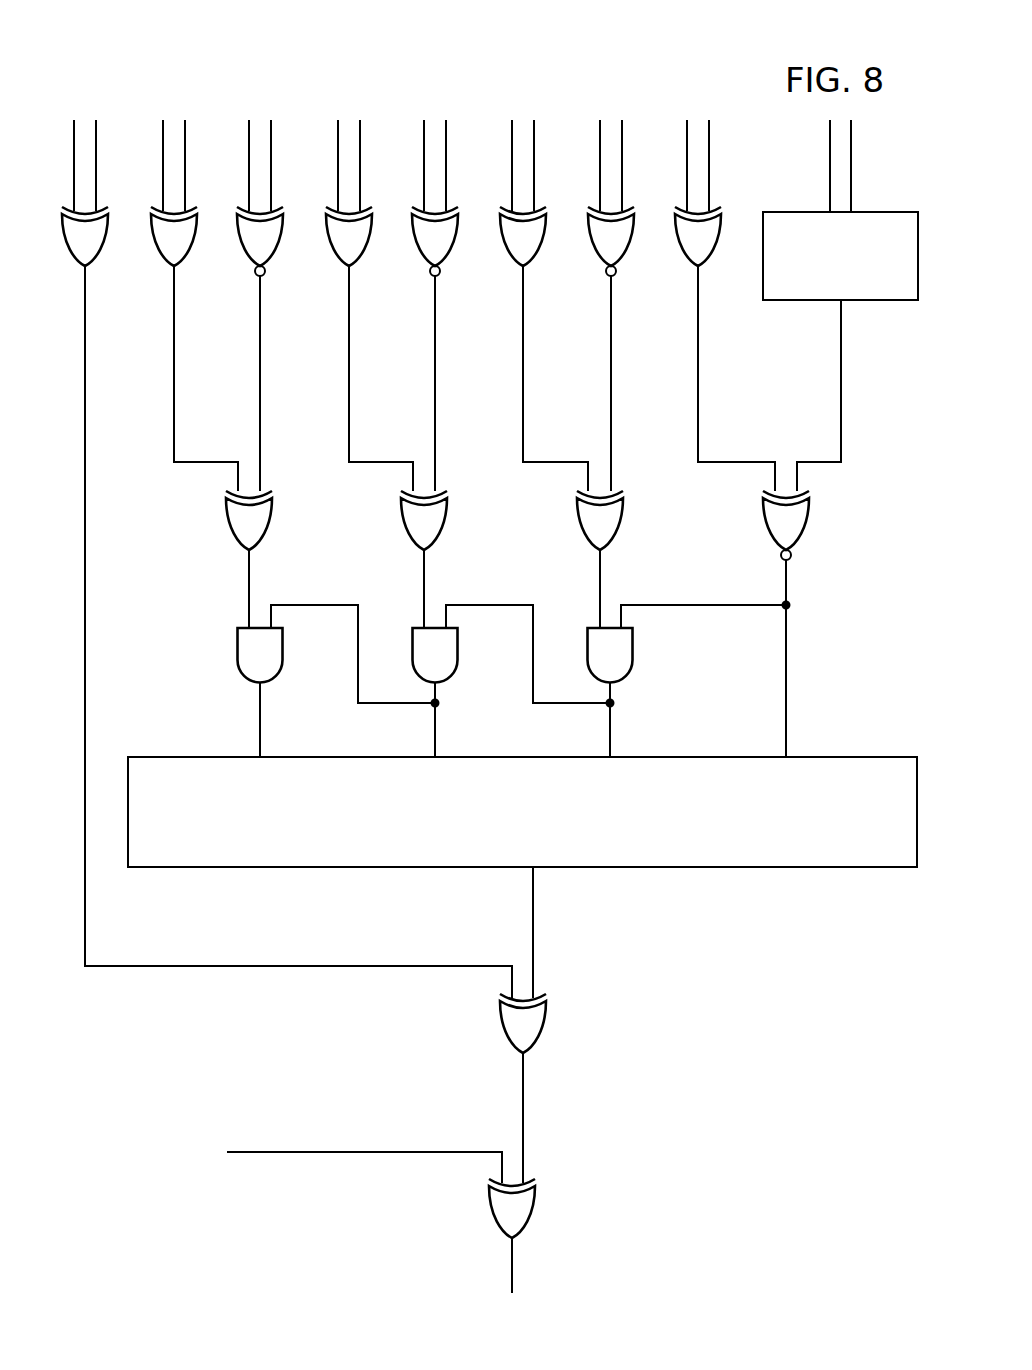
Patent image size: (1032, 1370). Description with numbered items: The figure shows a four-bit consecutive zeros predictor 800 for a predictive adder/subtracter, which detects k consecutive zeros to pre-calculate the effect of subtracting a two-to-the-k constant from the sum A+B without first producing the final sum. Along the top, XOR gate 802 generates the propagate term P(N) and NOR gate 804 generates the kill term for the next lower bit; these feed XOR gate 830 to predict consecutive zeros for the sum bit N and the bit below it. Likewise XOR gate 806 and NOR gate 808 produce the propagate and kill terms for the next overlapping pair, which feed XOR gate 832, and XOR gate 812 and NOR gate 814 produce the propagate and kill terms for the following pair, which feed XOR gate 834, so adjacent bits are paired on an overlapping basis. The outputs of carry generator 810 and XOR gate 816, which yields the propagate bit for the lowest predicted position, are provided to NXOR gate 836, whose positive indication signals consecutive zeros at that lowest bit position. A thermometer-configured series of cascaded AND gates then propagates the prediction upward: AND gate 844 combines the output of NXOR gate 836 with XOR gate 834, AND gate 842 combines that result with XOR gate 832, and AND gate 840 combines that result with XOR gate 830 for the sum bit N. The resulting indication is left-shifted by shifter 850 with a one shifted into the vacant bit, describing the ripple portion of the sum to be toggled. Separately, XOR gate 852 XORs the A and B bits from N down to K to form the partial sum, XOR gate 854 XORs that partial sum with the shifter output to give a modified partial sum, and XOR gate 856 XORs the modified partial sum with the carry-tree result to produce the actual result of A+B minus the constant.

The consecutive zeros predictor 800 is at (268, 93).
The XOR gate 802 is at (157, 252).
The NOR gate 804 is at (243, 252).
The XOR gate 806 is at (332, 252).
The NOR gate 808 is at (452, 252).
The carry generator 810 is at (873, 300).
The XOR gate 812 is at (540, 252).
The NOR gate 814 is at (628, 252).
The XOR gate 816 is at (715, 252).
The XOR gate 830 is at (228, 520).
The XOR gate 832 is at (403, 520).
The XOR gate 834 is at (622, 520).
The NXOR gate 836 is at (808, 520).
The AND gate 840 is at (242, 670).
The AND gate 842 is at (454, 670).
The AND gate 844 is at (629, 670).
The shifter 850 is at (857, 867).
The XOR gate 852 is at (68, 252).
The XOR gate 854 is at (501, 1022).
The XOR gate 856 is at (490, 1207).